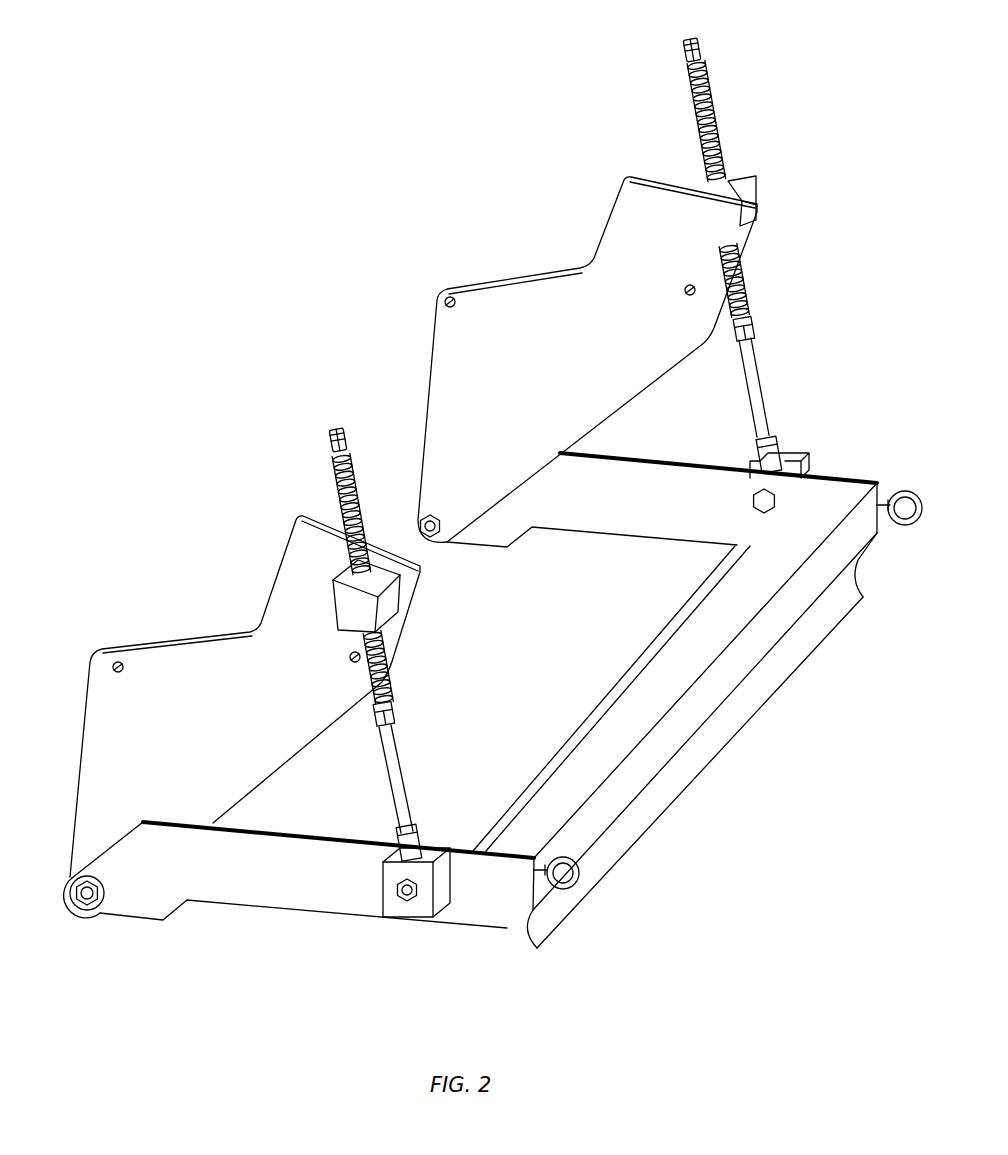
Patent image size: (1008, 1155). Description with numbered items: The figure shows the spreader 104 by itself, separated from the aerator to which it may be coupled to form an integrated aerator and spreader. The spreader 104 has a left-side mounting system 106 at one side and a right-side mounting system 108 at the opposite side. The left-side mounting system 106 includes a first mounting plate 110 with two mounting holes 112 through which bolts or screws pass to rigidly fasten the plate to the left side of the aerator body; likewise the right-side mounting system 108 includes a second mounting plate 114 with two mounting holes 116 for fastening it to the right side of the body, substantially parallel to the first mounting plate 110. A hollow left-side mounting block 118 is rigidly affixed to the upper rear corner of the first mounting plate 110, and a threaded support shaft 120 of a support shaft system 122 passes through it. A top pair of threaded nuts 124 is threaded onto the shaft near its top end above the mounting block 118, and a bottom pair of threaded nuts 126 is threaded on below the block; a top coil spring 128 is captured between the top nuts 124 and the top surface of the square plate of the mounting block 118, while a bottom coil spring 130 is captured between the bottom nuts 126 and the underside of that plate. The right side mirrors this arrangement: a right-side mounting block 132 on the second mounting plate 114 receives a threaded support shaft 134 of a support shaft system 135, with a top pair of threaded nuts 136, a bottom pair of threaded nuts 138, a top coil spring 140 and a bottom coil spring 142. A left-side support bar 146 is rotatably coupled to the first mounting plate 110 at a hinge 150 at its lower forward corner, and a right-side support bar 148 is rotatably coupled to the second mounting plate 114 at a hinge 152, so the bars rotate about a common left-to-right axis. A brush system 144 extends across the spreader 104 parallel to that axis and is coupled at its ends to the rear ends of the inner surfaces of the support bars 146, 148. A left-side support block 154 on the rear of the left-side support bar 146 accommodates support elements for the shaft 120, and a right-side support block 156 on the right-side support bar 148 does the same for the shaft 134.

The spreader 104 is at (275, 152).
The left-side mounting system 106 is at (192, 603).
The right-side mounting system 108 is at (530, 238).
The first mounting plate 110 is at (125, 748).
The mounting holes 112 is at (115, 664).
The second mounting plate 114 is at (465, 345).
The mounting holes 116 is at (448, 300).
The left-side mounting block 118 is at (370, 597).
The threaded support shaft 120 is at (400, 792).
The support shaft system 122 is at (378, 832).
The top pair of threaded nuts 124 is at (330, 440).
The bottom pair of threaded nuts 126 is at (395, 718).
The top coil spring 128 is at (355, 485).
The bottom coil spring 130 is at (385, 672).
The right-side mounting block 132 is at (753, 178).
The threaded support shaft 134 is at (758, 390).
The support shaft system 135 is at (737, 455).
The top pair of threaded nuts 136 is at (685, 48).
The bottom pair of threaded nuts 138 is at (754, 330).
The top coil spring 140 is at (716, 102).
The bottom coil spring 142 is at (750, 276).
The brush system 144 is at (767, 722).
The left-side support bar 146 is at (290, 877).
The right-side support bar 148 is at (635, 507).
The hinge 150 is at (85, 907).
The hinge 152 is at (432, 536).
The left-side support block 154 is at (412, 903).
The right-side support block 156 is at (793, 460).